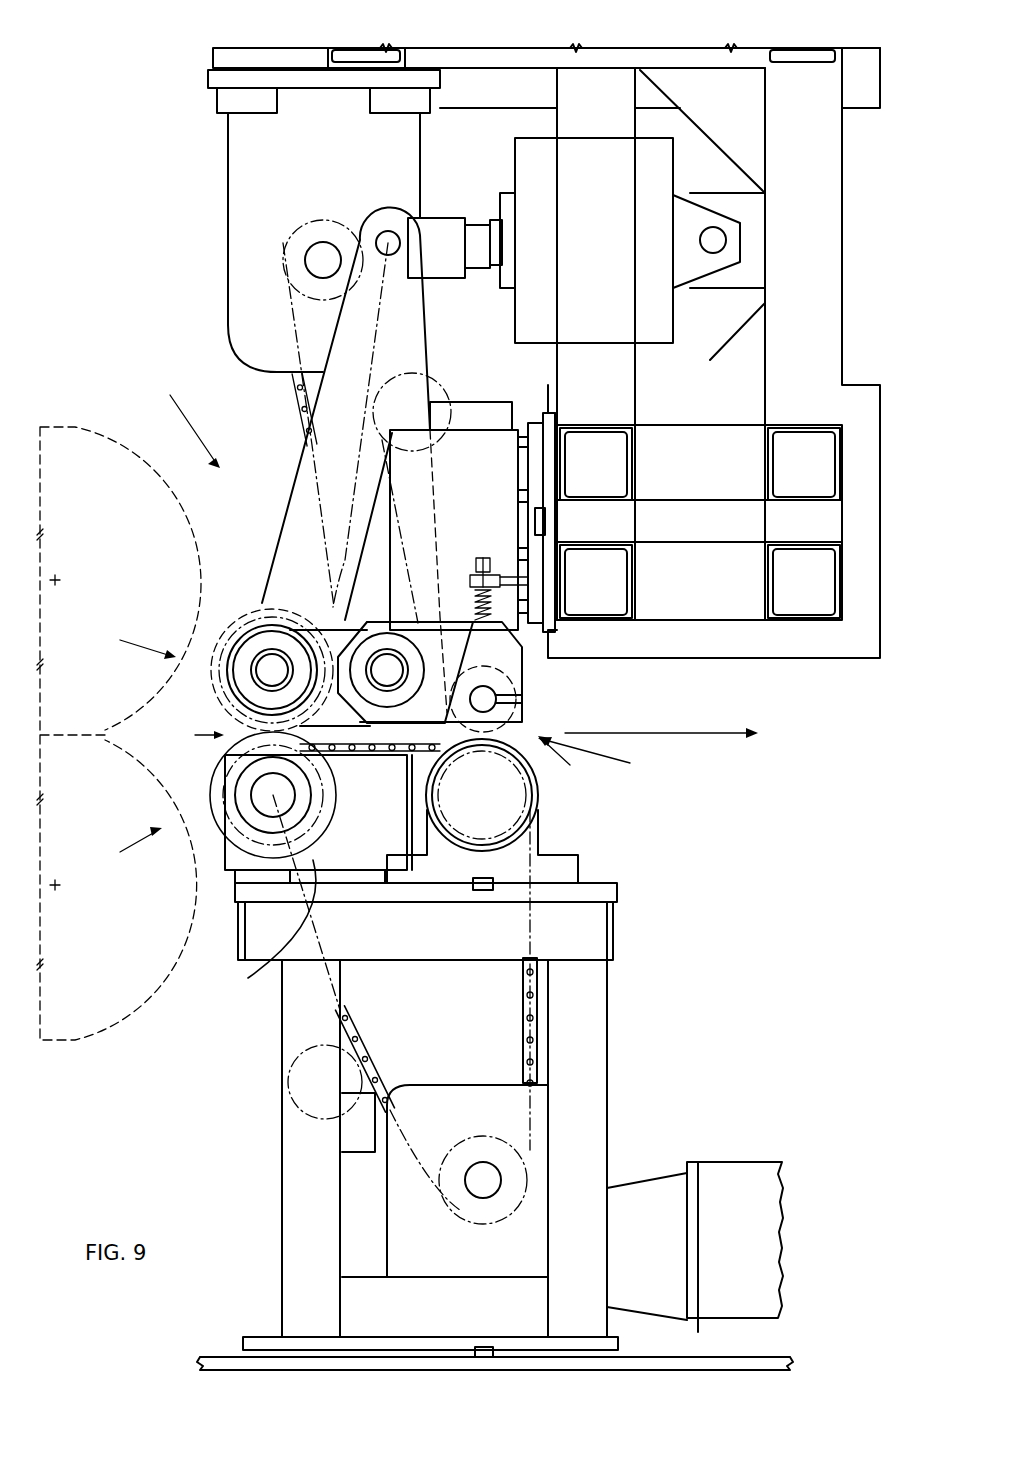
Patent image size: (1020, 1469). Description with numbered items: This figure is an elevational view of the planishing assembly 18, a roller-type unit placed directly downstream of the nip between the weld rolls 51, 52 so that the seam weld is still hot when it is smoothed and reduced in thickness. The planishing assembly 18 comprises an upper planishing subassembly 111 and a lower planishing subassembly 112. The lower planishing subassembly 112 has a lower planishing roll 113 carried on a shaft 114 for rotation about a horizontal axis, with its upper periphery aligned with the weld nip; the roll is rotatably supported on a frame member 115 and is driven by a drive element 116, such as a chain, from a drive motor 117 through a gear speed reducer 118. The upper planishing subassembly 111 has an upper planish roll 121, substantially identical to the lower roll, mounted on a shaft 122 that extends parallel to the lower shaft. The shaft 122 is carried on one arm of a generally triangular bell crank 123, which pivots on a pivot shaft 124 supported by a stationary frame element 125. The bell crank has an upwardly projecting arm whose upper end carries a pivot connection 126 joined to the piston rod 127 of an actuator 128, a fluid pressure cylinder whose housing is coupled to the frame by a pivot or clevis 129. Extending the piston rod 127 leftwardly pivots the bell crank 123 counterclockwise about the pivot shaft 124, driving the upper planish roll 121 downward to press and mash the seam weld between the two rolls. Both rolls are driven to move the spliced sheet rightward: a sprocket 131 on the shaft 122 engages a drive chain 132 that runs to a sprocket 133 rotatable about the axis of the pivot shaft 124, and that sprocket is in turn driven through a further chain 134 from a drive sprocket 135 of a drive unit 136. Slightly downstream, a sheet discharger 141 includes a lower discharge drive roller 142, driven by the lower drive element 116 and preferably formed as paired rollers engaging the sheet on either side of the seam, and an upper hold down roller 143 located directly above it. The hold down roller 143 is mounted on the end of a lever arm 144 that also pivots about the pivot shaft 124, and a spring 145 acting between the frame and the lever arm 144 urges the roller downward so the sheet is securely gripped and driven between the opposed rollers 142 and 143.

The planishing assembly 18 is at (183, 418).
The weld roll 51 is at (110, 455).
The weld roll 52 is at (128, 1000).
The upper planishing subassembly 111 is at (129, 640).
The lower planishing subassembly 112 is at (120, 850).
The lower planishing roll 113 is at (222, 790).
The shaft 114 is at (285, 805).
The frame member 115 is at (262, 958).
The drive element 116 is at (362, 1042).
The drive motor 117 is at (736, 1178).
The gear speed reducer 118 is at (510, 1105).
The upper planish roll 121 is at (218, 690).
The shaft 122 is at (279, 655).
The bell crank 123 is at (268, 545).
The pivot shaft 124 is at (381, 650).
The stationary frame element 125 is at (478, 450).
The pivot connection 126 is at (388, 231).
The piston rod 127 is at (473, 232).
The actuator 128 is at (600, 165).
The pivot or clevis 129 is at (715, 253).
The sprocket 131 is at (245, 620).
The drive chain 132 is at (354, 548).
The sprocket 133 is at (435, 540).
The further chain 134 is at (296, 395).
The drive sprocket 135 is at (307, 248).
The drive unit 136 is at (228, 200).
The sheet discharger 141 is at (648, 754).
The lower discharge drive roller 142 is at (499, 809).
The upper hold down roller 143 is at (525, 735).
The lever arm 144 is at (522, 672).
The spring 145 is at (498, 580).